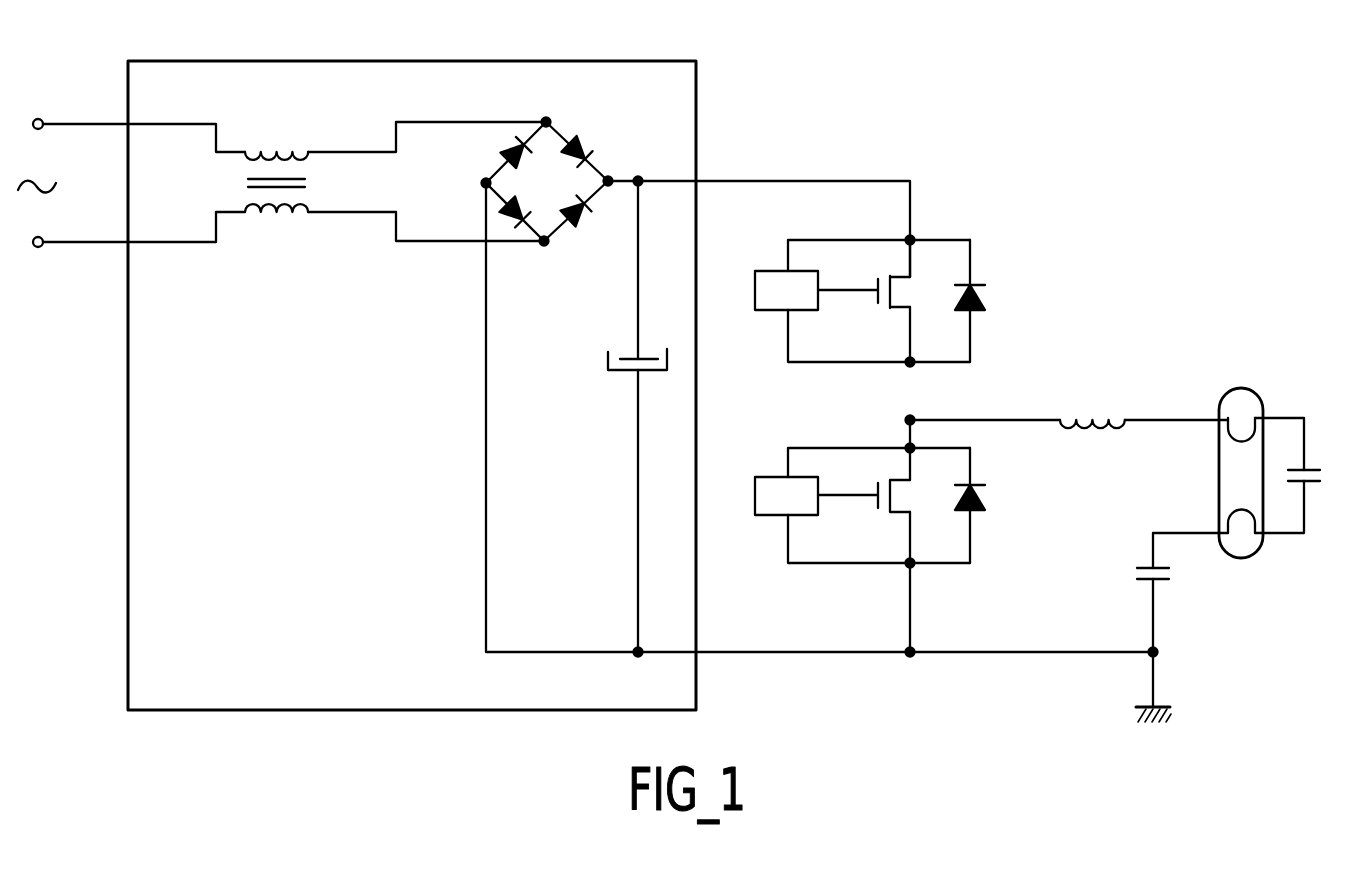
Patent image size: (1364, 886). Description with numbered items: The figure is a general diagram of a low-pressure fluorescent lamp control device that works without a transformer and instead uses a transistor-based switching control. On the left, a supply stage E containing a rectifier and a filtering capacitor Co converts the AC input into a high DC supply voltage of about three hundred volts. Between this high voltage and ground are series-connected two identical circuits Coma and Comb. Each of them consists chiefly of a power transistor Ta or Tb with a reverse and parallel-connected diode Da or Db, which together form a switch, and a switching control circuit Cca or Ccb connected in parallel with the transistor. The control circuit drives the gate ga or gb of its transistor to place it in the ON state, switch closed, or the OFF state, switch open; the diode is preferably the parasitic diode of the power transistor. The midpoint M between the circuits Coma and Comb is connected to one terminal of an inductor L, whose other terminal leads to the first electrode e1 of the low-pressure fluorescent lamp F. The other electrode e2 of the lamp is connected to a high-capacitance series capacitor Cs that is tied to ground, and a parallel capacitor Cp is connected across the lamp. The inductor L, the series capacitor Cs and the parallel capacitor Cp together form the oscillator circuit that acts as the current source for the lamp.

The supply stage E is at (647, 61).
The filtering capacitor Co is at (606, 361).
The first circuit Coma is at (975, 238).
The second circuit Comb is at (970, 565).
The switching control circuit Cca is at (755, 289).
The switching control circuit Ccb is at (755, 494).
The gate of power transistor Ta ga is at (880, 287).
The gate of power transistor Tb gb is at (880, 492).
The power transistor Ta is at (892, 308).
The power transistor Tb is at (892, 512).
The diode Da is at (985, 300).
The diode Db is at (985, 500).
The midpoint M is at (908, 419).
The inductor L is at (1097, 416).
The low-pressure fluorescent lamp F is at (1240, 386).
The first electrode e1 is at (1241, 444).
The second electrode e2 is at (1241, 512).
The parallel capacitor Cp is at (1318, 484).
The series capacitor Cs is at (1170, 588).